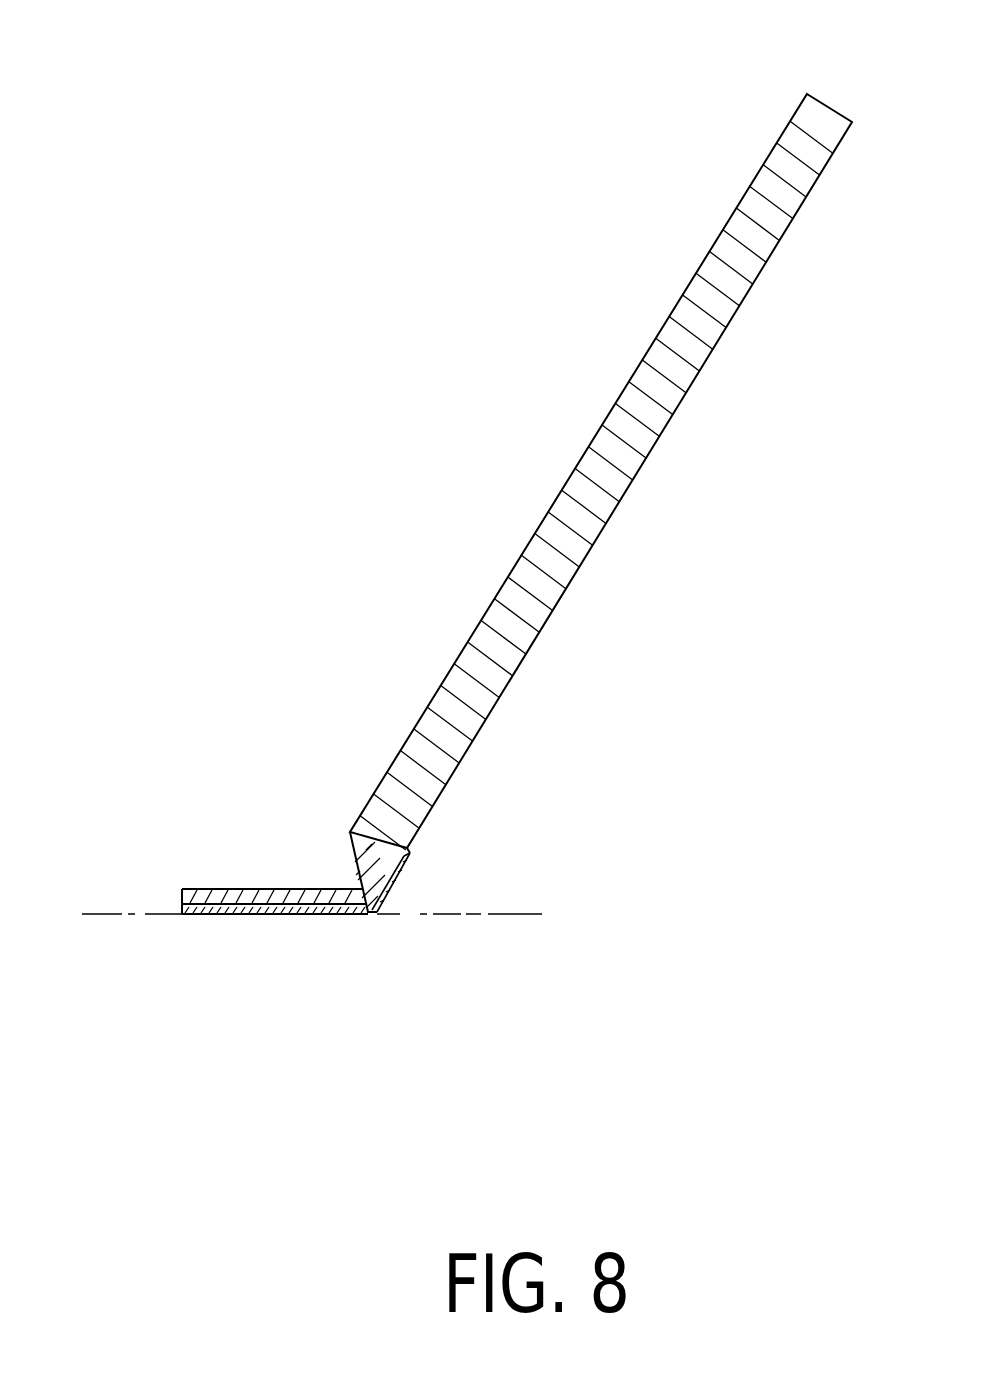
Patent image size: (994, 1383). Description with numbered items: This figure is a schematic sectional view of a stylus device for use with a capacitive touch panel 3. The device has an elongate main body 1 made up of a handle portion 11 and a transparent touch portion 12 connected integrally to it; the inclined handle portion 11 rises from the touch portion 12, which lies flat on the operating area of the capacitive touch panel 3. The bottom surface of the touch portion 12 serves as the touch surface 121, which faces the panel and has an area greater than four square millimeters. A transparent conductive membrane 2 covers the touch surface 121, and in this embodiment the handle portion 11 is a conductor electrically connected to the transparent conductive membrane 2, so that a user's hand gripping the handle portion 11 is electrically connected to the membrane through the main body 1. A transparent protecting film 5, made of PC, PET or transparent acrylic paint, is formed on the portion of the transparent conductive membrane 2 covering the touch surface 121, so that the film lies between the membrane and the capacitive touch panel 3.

The main body 1 is at (455, 526).
The handle portion 11 is at (678, 303).
The touch portion 12 is at (213, 897).
The touch surface 121 is at (272, 898).
The transparent conductive membrane 2 is at (401, 906).
The capacitive touch panel 3 is at (465, 912).
The transparent protecting film 5 is at (273, 912).